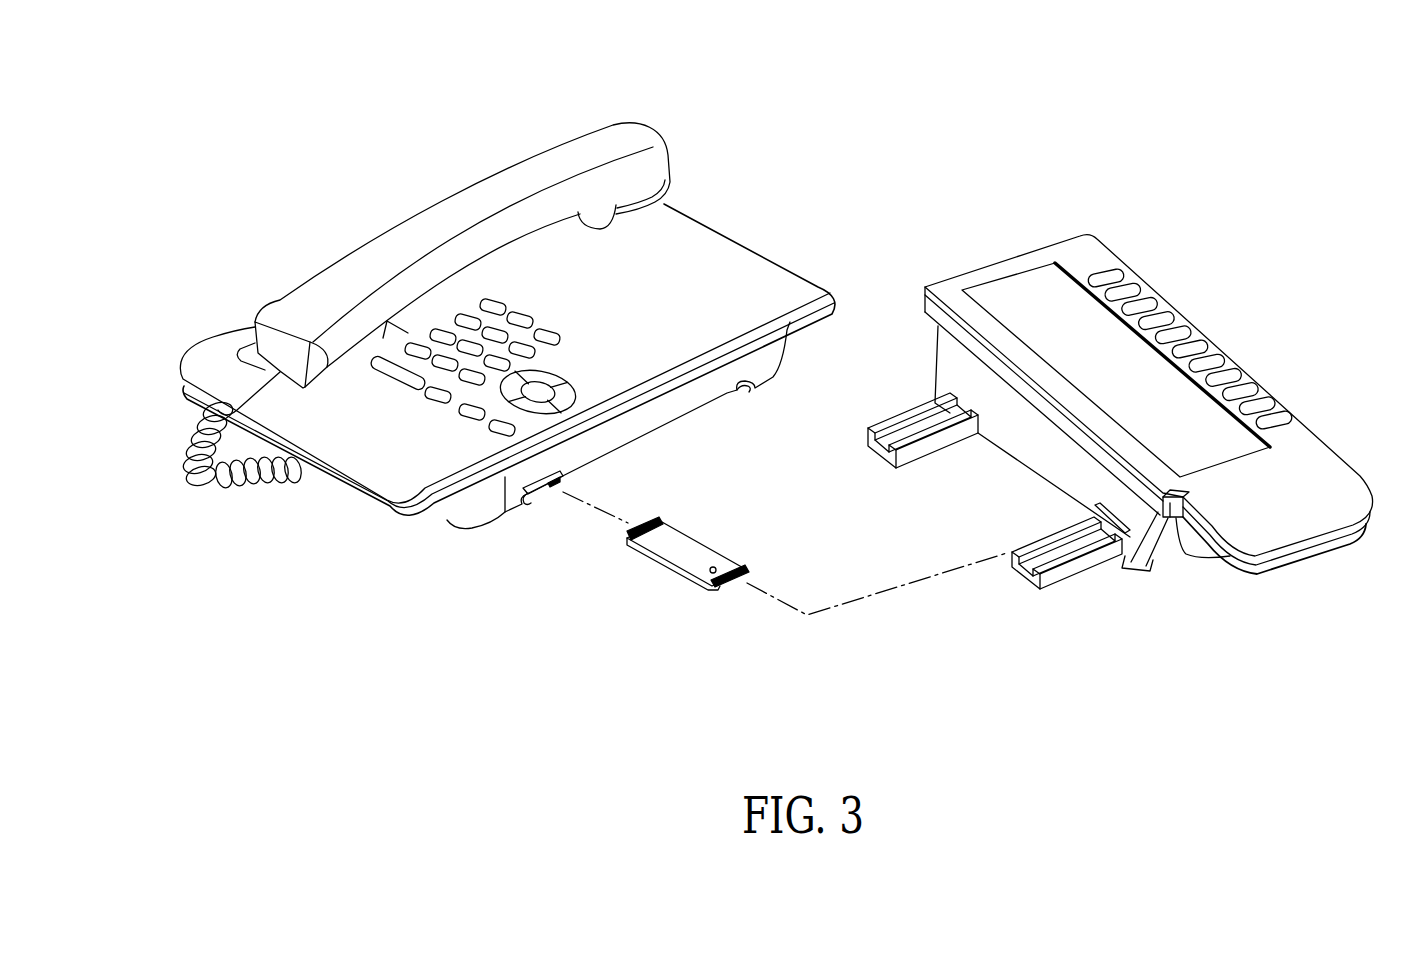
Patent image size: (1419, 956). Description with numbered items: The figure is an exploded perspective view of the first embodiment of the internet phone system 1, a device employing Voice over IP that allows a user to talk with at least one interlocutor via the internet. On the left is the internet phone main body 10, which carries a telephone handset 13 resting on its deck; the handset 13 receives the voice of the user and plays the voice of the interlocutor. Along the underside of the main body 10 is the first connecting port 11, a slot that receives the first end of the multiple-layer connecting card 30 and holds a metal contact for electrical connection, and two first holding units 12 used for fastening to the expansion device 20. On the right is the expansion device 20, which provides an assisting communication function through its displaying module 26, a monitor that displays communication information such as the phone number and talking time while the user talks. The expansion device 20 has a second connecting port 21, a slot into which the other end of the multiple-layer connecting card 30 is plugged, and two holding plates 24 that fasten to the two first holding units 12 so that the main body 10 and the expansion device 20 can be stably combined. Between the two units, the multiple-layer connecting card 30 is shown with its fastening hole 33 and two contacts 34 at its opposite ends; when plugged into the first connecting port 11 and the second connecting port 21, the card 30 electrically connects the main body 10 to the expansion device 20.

The internet phone system 1 is at (255, 95).
The internet phone main body 10 is at (507, 318).
The first connecting port 11 is at (558, 487).
The first holding unit 12 is at (527, 512).
The telephone handset 13 is at (595, 140).
The expansion device 20 is at (1120, 394).
The second connecting port 21 is at (1147, 560).
The holding plate 24 is at (922, 433).
The displaying module 26 is at (992, 290).
The multiple-layer connecting card 30 is at (644, 599).
The fastening hole 33 is at (710, 574).
The contact 34 is at (627, 535).